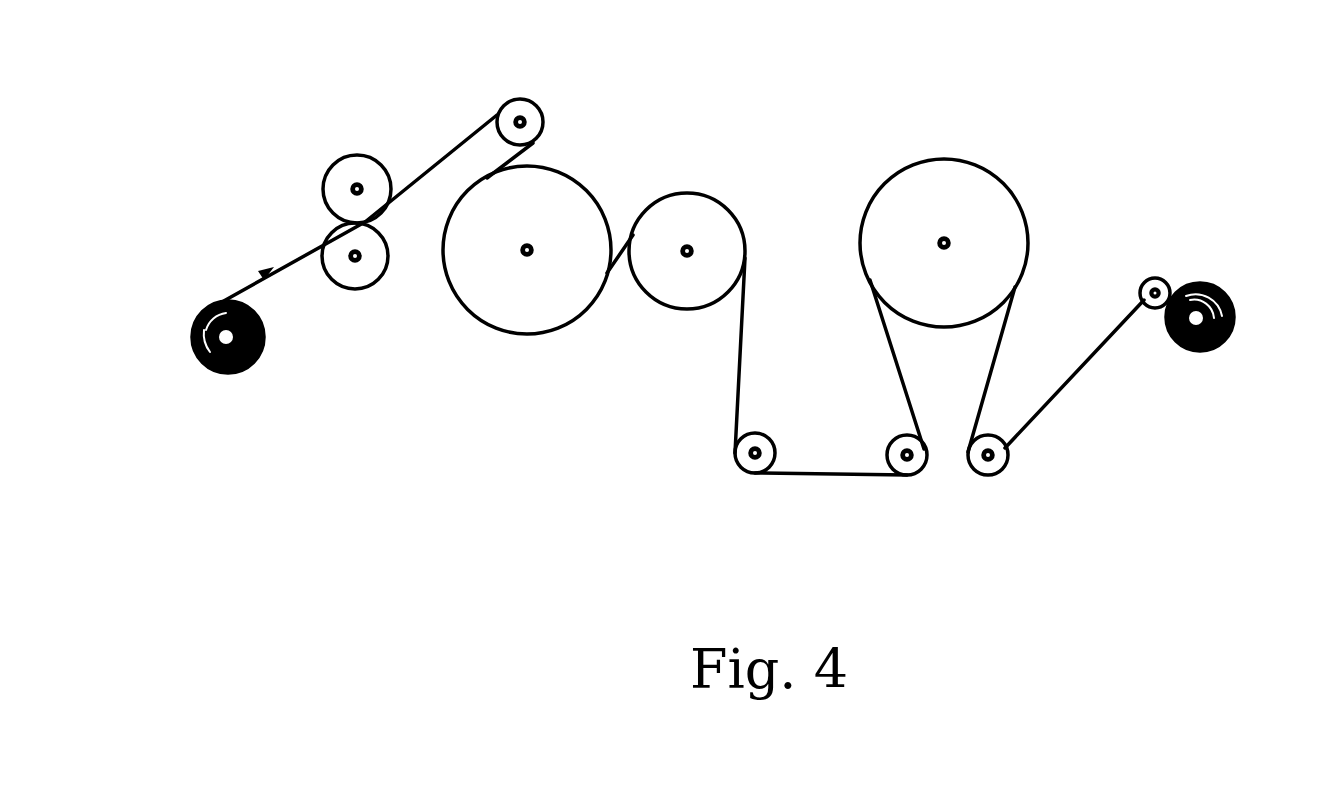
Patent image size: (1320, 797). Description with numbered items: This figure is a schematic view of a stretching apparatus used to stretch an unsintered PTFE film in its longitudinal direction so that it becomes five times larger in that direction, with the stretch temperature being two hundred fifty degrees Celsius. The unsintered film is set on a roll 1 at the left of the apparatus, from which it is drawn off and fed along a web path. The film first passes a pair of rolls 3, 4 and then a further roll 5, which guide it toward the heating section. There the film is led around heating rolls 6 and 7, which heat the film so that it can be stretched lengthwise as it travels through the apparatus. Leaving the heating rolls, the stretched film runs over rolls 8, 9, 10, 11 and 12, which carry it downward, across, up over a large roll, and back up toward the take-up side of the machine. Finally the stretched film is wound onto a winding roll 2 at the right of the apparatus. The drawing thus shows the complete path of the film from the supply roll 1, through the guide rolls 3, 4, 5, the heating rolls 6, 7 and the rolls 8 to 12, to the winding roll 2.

The roll 1 is at (253, 375).
The winding roll 2 is at (1250, 290).
The roll 3 is at (370, 270).
The roll 4 is at (338, 182).
The roll 5 is at (537, 118).
The heating roll 6 is at (555, 202).
The heating roll 7 is at (707, 215).
The roll 8 is at (755, 474).
The roll 9 is at (912, 475).
The roll 10 is at (973, 190).
The roll 11 is at (998, 476).
The roll 12 is at (1152, 278).